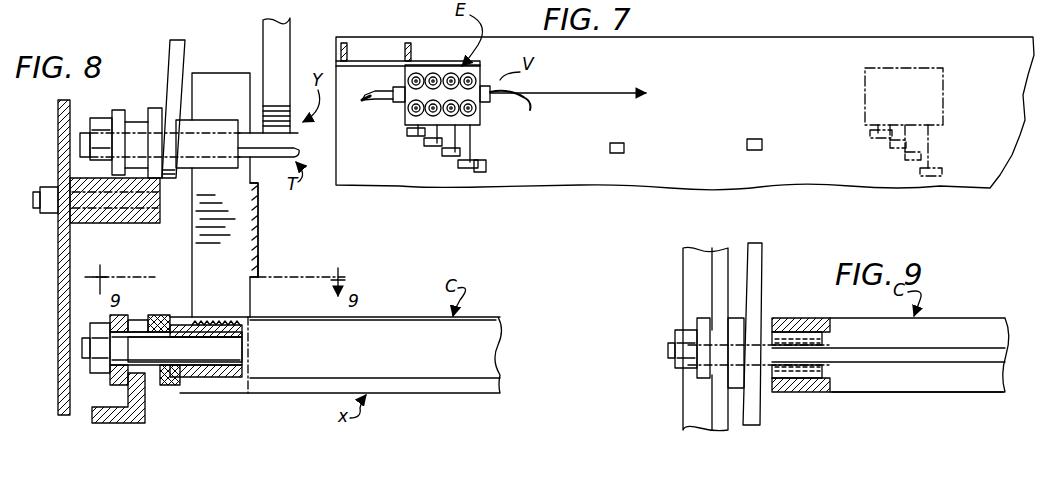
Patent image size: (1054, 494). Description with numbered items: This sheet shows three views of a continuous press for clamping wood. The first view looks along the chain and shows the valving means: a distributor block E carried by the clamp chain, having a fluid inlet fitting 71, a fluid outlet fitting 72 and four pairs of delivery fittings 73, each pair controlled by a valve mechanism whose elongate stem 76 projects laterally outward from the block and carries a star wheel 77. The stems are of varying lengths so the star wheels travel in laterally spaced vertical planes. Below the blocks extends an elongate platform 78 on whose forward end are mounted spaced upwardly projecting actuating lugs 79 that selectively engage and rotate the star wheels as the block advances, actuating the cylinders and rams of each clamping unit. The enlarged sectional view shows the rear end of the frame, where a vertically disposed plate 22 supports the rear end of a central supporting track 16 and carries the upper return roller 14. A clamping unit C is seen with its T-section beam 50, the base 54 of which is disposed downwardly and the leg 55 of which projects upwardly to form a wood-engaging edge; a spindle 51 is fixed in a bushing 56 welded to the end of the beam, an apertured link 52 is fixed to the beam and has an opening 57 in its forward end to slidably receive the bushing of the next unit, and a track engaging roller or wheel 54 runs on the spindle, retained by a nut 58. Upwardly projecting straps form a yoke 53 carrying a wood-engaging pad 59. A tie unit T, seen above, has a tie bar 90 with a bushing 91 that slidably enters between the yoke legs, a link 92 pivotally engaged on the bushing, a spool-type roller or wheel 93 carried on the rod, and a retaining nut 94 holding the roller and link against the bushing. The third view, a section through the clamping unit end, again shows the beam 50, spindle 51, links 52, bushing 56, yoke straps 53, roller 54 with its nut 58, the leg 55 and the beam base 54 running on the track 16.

In FIG. 8, the upper discharge or return roller 14 is at (264, 38).
In FIG. 8, the central supporting track 16 is at (145, 410).
In FIG. 9, the central supporting track 16 is at (695, 273).
In FIG. 8, the plate 22 is at (58, 133).
In FIG. 8, the beam 50 is at (392, 316).
In FIG. 9, the beam 50 is at (994, 317).
In FIG. 8, the spindle 51 is at (145, 345).
In FIG. 9, the spindle 51 is at (672, 350).
In FIG. 8, the link 52 is at (184, 312).
In FIG. 9, the link 52 is at (758, 262).
In FIG. 8, the yoke 53 is at (222, 236).
In FIG. 9, the yoke 53 is at (814, 318).
In FIG. 8, the track engaging roller or wheel 54 is at (112, 383).
In FIG. 9, the track engaging roller or wheel 54 is at (702, 328).
In FIG. 8, the leg 55 is at (490, 336).
In FIG. 9, the leg 55 is at (932, 393).
In FIG. 8, the bushing 56 is at (208, 330).
In FIG. 9, the bushing 56 is at (786, 335).
In FIG. 8, the opening 57 is at (172, 336).
In FIG. 8, the nut 58 is at (92, 347).
In FIG. 9, the nut 58 is at (690, 376).
In FIG. 8, the wood-engaging pad 59 is at (260, 270).
In FIG. 7, the fluid inlet fitting 71 is at (490, 82).
In FIG. 7, the fluid outlet fitting 72 is at (398, 112).
In FIG. 7, the delivery fitting 73 is at (480, 115).
In FIG. 7, the stem 76 is at (475, 148).
In FIG. 7, the star wheel 77 is at (467, 168).
In FIG. 7, the platform 78 is at (700, 180).
In FIG. 7, the actuating lug 79 is at (622, 143).
In FIG. 8, the tie bar 90 is at (292, 143).
In FIG. 8, the bushing 91 is at (218, 128).
In FIG. 8, the link 92 is at (163, 108).
In FIG. 8, the spool-type roller or wheel 93 is at (126, 116).
In FIG. 8, the retaining nut 94 is at (100, 122).